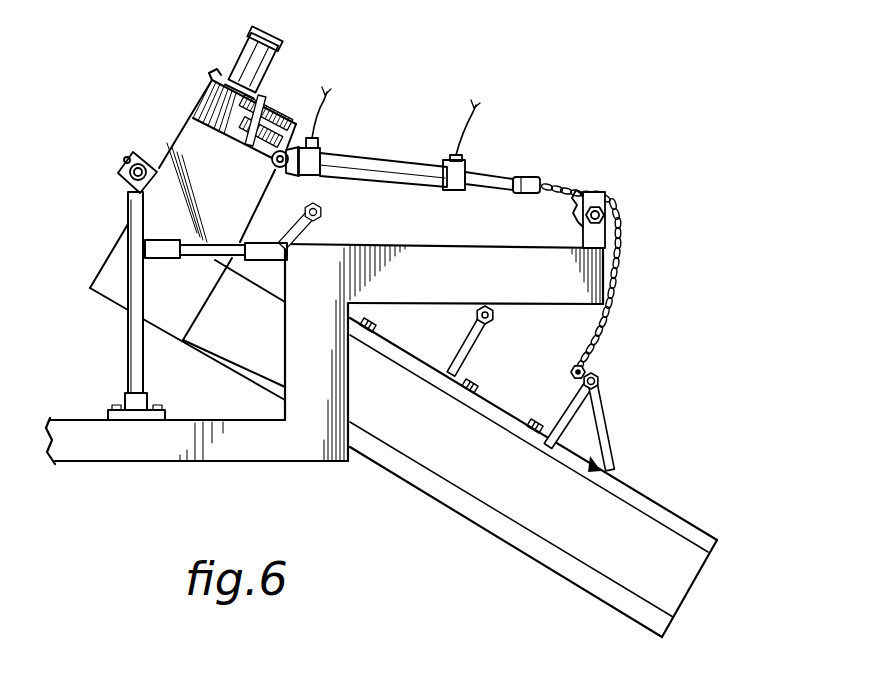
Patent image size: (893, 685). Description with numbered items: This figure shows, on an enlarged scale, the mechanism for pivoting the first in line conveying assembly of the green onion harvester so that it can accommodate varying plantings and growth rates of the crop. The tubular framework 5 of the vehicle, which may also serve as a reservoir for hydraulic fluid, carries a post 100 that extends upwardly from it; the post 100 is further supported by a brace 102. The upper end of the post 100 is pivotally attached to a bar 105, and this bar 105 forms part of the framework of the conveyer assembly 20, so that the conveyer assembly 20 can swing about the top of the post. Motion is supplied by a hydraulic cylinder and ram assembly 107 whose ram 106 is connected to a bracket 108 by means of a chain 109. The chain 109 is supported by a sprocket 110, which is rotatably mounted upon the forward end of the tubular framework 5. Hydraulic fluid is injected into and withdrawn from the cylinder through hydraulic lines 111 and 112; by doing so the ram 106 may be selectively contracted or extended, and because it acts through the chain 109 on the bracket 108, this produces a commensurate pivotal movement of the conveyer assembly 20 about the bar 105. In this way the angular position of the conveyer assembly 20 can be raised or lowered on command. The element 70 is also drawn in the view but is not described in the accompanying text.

The framework 5 is at (413, 244).
The conveyer assembly 20 is at (446, 509).
The air cylinder 70 is at (278, 52).
The post 100 is at (128, 347).
The brace 102 is at (214, 242).
The bar 105 is at (140, 150).
The ram 106 is at (498, 176).
The hydraulic cylinder and ram assembly 107 is at (385, 156).
The bracket 108 is at (604, 405).
The chain 109 is at (620, 231).
The sprocket 110 is at (585, 190).
The hydraulic line 111 is at (331, 108).
The hydraulic line 112 is at (468, 131).